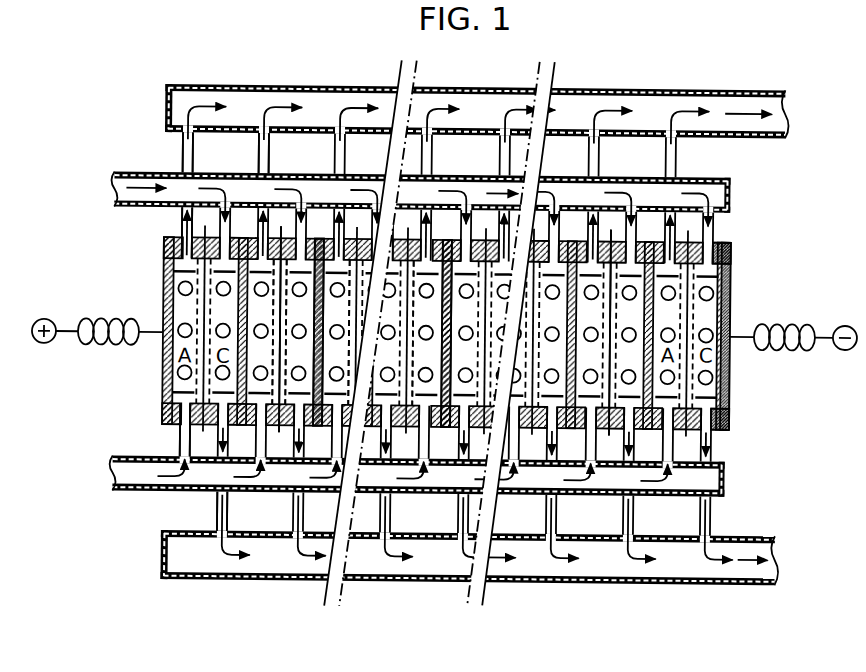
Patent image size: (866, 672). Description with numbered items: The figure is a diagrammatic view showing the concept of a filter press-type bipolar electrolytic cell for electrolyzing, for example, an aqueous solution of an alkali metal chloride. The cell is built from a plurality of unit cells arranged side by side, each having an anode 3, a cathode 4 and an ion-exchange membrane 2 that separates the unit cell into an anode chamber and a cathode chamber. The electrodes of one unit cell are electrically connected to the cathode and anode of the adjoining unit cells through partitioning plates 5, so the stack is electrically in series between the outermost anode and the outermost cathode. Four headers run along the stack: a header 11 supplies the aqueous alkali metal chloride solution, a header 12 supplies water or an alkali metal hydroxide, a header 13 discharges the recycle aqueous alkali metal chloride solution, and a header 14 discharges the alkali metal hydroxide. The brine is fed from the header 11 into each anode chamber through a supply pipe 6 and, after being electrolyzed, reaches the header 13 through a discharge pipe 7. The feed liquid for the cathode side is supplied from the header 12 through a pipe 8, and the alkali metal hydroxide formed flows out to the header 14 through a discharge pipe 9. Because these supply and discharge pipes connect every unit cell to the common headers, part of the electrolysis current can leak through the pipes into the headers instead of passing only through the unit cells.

The ion-exchange membrane 2 is at (280, 437).
The anode 3 is at (273, 314).
The cathode 4 is at (286, 313).
The partitioning plate 5 is at (322, 353).
The supply pipe 6 is at (181, 444).
The discharge pipe 7 is at (181, 156).
The pipe 8 is at (257, 155).
The discharge pipe 9 is at (219, 508).
The header 11 is at (136, 494).
The header 12 is at (147, 210).
The header 13 is at (189, 90).
The header 14 is at (620, 582).